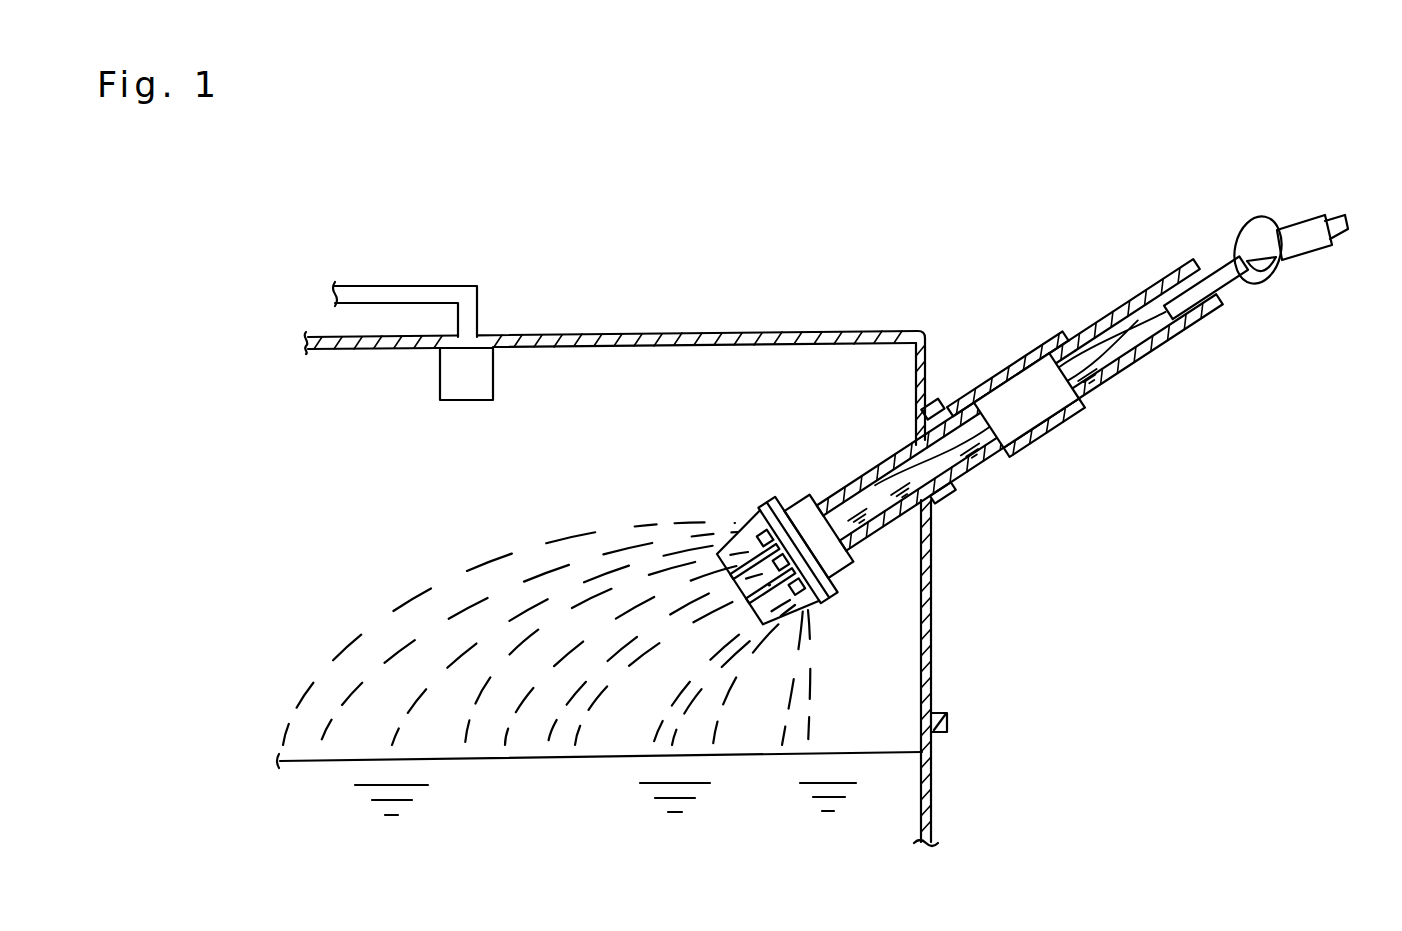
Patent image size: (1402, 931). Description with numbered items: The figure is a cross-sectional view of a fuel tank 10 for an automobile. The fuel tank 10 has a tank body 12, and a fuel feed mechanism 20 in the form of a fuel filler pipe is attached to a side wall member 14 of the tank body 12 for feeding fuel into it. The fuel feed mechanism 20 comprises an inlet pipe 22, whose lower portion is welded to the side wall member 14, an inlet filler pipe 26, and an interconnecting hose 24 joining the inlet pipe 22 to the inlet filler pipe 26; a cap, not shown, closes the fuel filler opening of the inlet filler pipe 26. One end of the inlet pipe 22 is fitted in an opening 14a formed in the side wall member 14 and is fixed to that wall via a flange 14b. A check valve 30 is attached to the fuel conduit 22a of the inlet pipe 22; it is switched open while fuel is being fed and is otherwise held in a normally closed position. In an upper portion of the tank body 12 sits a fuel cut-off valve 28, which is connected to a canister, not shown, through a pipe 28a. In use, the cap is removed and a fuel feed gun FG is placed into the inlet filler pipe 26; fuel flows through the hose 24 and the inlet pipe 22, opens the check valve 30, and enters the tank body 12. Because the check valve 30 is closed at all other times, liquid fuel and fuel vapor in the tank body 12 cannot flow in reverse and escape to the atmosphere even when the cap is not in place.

The fuel tank 10 is at (899, 207).
The tank body 12 is at (667, 333).
The side wall member 14 is at (933, 612).
The opening 14a is at (918, 452).
The flange 14b is at (932, 405).
The fuel feed mechanism 20 is at (1038, 310).
The inlet pipe 22 is at (953, 485).
The fuel conduit 22a is at (828, 500).
The interconnecting hose 24 is at (1072, 417).
The inlet filler pipe 26 is at (1160, 345).
The fuel cut-off valve 28 is at (483, 385).
The pipe 28a is at (413, 286).
The check valve 30 is at (832, 619).
The fuel feed gun FG is at (1302, 256).